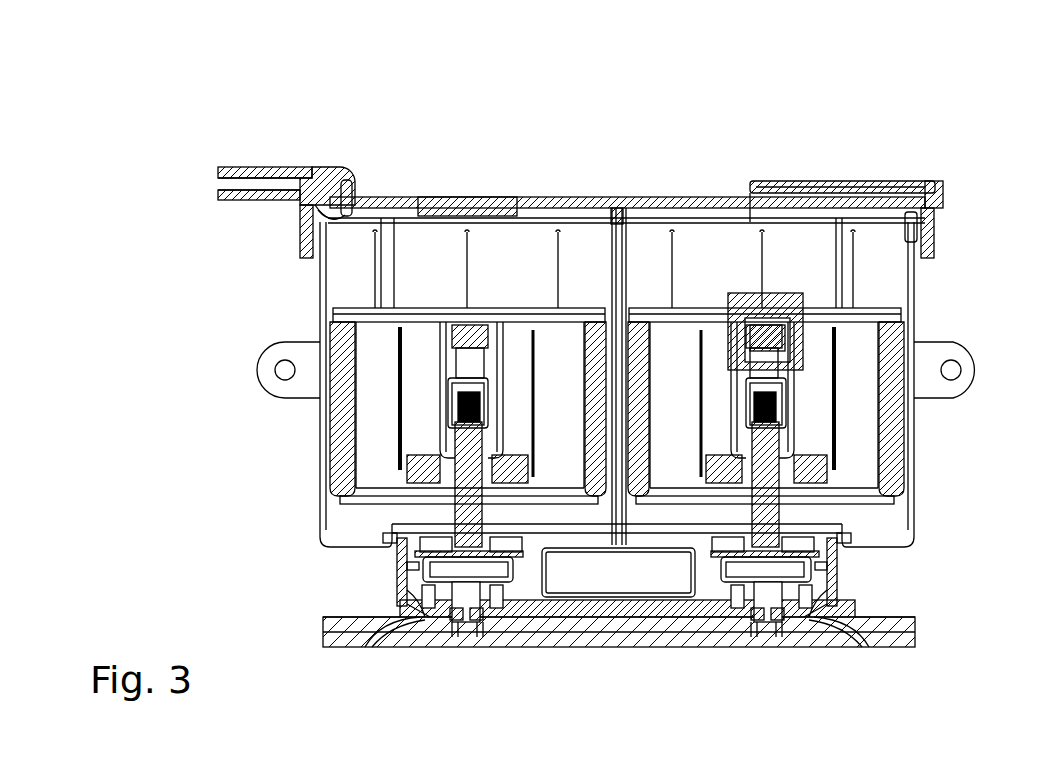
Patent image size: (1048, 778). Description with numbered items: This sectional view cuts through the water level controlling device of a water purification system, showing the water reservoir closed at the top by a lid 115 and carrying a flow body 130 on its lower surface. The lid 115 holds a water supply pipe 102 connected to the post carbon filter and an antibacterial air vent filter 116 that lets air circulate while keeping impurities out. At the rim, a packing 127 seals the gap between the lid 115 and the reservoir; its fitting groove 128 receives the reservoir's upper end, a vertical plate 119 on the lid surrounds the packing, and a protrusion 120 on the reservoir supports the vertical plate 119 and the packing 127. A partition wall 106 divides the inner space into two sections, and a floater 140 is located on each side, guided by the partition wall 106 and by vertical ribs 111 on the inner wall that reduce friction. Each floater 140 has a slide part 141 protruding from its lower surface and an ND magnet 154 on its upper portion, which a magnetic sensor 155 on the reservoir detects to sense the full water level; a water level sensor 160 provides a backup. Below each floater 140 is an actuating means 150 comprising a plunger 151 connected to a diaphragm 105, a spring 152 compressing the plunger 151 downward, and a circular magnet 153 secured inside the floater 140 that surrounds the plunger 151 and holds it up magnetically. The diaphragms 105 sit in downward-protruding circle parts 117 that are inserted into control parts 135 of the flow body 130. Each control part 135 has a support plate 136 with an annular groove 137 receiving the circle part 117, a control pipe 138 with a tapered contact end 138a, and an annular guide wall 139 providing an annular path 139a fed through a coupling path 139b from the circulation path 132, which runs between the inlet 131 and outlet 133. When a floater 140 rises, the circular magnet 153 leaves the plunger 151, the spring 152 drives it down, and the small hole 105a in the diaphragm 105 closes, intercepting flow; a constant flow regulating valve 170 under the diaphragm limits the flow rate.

The water supply pipe 102 is at (258, 167).
The diaphragm 105 is at (428, 608).
The small hole 105a is at (455, 620).
The partition wall 106 is at (620, 270).
The rib 111 is at (556, 255).
The lid 115 is at (614, 210).
The air vent filter 116 is at (425, 197).
The circle part 117 is at (527, 560).
The vertical plate 119 is at (305, 225).
The protrusion 120 is at (345, 185).
The packing 127 is at (330, 215).
The fitting groove 128 is at (323, 208).
The flow body 130 is at (640, 634).
The inlet 131 is at (878, 648).
The circulation path 132 is at (610, 618).
The outlet 133 is at (334, 648).
The control part 135 is at (388, 576).
The support plate 136 is at (690, 576).
The annular groove 137 is at (430, 584).
The control pipe 138 is at (484, 612).
The contact end 138a is at (476, 622).
The annular guide wall 139 is at (430, 605).
The annular path 139a is at (405, 625).
The coupling path 139b is at (500, 610).
The floater 140 is at (334, 445).
The slide part 141 is at (400, 513).
The actuating means 150 is at (396, 468).
The plunger 151 is at (460, 500).
The spring 152 is at (456, 410).
The circular magnet 153 is at (460, 380).
The ND magnet 154 is at (462, 328).
The magnetic sensor 155 is at (873, 181).
The water level sensor 160 is at (805, 300).
The constant flow regulating valve 170 is at (470, 615).